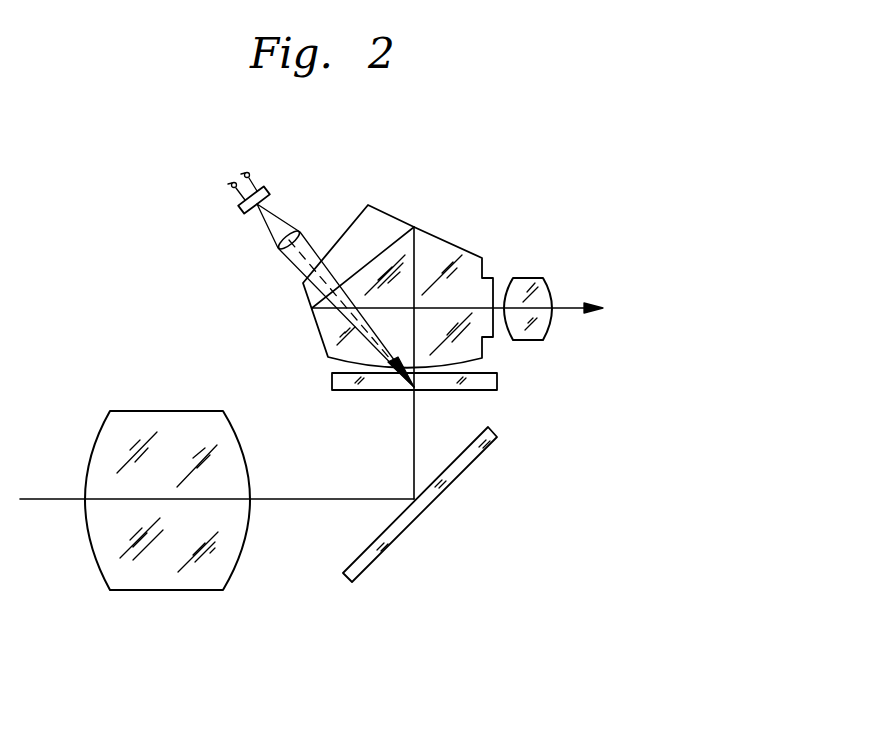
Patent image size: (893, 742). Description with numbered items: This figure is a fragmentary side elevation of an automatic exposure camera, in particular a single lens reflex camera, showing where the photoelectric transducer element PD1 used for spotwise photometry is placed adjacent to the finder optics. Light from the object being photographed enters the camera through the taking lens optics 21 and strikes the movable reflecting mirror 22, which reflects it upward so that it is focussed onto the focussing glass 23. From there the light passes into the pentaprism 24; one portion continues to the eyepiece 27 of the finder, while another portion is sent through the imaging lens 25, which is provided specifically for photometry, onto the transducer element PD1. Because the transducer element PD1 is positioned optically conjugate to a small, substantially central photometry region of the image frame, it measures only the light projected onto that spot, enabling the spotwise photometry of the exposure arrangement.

The taking lens optics 21 is at (187, 415).
The movable reflecting mirror 22 is at (458, 473).
The focussing glass 23 is at (433, 389).
The pentaprism 24 is at (390, 226).
The imaging lens 25 is at (280, 245).
The eyepiece 27 is at (525, 281).
The photoelectric transducer element PD1 is at (265, 185).